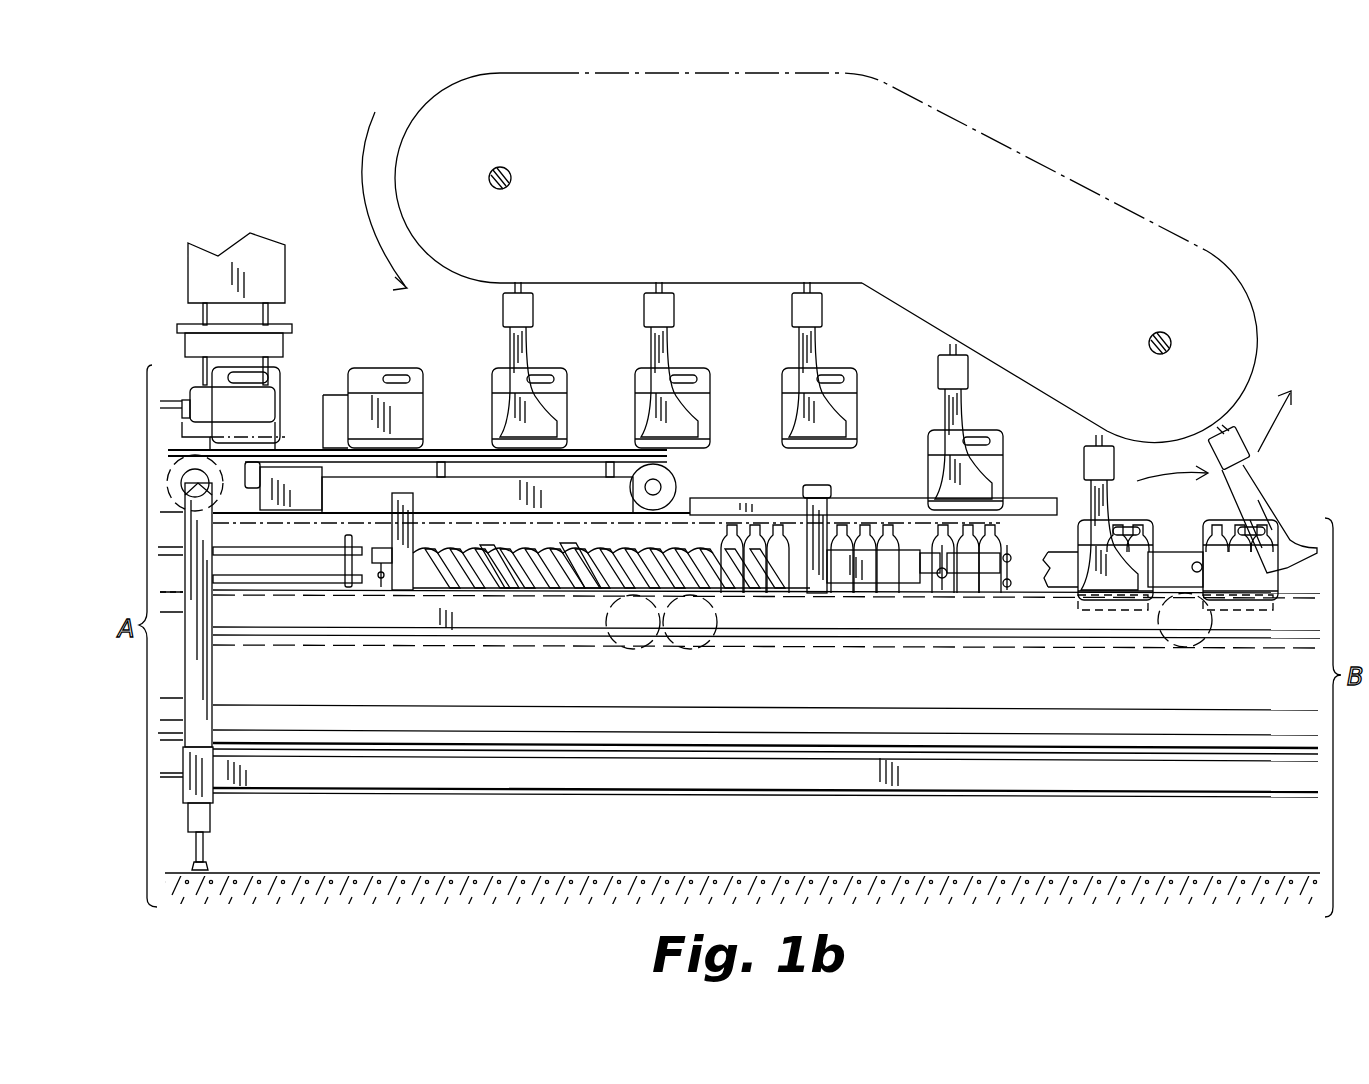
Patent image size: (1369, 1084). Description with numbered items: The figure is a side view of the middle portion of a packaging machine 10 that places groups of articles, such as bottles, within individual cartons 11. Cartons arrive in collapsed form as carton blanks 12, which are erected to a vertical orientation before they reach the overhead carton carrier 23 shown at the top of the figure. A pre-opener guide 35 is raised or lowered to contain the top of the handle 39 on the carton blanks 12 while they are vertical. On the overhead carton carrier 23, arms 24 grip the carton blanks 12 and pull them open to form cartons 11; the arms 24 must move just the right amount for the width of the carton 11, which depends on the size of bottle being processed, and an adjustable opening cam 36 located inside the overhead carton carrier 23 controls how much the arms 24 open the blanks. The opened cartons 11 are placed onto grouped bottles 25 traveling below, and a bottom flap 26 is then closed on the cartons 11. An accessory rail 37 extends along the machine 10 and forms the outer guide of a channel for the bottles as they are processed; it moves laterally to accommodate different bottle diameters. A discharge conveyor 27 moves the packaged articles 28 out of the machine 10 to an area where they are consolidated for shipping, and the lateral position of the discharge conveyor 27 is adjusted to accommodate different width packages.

The packaging machine 10 is at (333, 237).
The carton 11 is at (572, 400).
The carton blank 12 is at (278, 395).
The overhead carton carrier 23 is at (821, 185).
The arms 24 is at (507, 348).
The grouped bottles 25 is at (1003, 597).
The bottom flap 26 is at (286, 452).
The discharge conveyor 27 is at (1116, 650).
The packaged articles 28 is at (1206, 528).
The pre-opener guide 35 is at (283, 345).
The adjustable opening cam 36 is at (1070, 208).
The accessory rail 37 is at (1018, 557).
The handle 39 is at (374, 372).